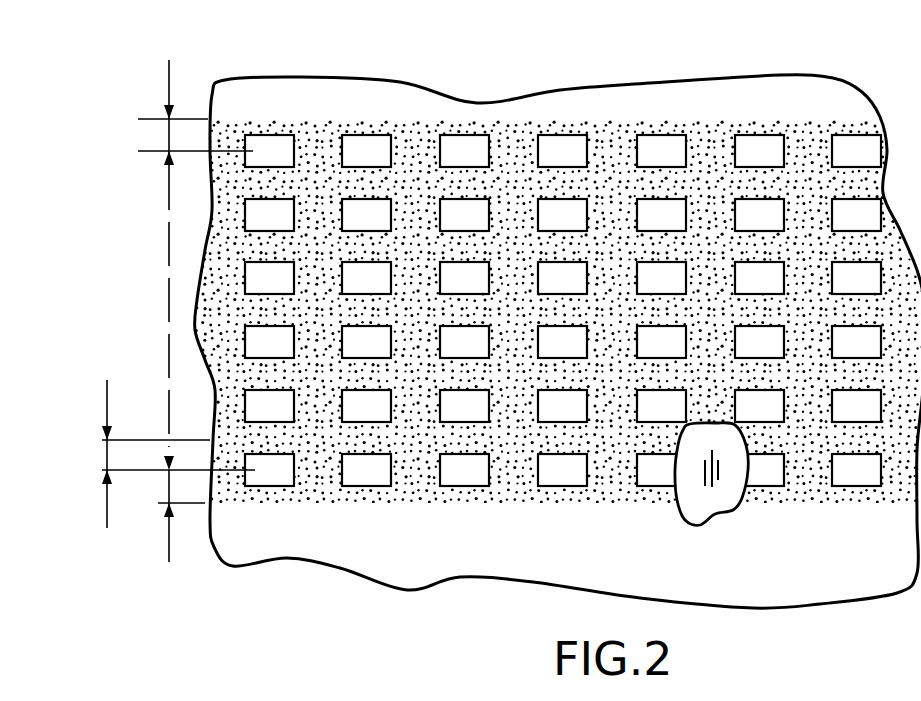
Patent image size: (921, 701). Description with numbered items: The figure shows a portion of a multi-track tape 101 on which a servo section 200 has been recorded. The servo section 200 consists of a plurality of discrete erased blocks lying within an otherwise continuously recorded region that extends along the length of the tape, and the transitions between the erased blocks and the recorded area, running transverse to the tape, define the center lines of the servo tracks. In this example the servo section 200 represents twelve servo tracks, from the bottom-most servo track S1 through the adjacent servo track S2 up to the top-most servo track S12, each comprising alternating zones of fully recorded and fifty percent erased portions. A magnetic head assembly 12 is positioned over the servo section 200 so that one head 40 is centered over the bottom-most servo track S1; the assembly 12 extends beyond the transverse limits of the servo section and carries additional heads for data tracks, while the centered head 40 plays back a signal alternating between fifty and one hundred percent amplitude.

The multi-track tape 101 is at (401, 82).
The servo section 200 is at (587, 118).
The magnetic head assembly 12 is at (717, 500).
The head 40 is at (702, 478).
The servo track S12 is at (195, 253).
The servo track S2 is at (173, 454).
The servo track S1 is at (178, 509).